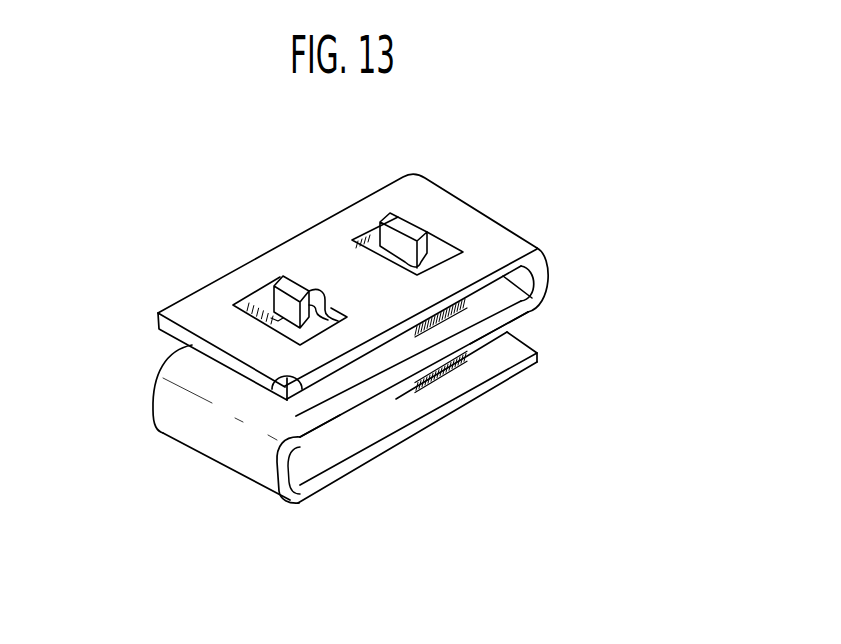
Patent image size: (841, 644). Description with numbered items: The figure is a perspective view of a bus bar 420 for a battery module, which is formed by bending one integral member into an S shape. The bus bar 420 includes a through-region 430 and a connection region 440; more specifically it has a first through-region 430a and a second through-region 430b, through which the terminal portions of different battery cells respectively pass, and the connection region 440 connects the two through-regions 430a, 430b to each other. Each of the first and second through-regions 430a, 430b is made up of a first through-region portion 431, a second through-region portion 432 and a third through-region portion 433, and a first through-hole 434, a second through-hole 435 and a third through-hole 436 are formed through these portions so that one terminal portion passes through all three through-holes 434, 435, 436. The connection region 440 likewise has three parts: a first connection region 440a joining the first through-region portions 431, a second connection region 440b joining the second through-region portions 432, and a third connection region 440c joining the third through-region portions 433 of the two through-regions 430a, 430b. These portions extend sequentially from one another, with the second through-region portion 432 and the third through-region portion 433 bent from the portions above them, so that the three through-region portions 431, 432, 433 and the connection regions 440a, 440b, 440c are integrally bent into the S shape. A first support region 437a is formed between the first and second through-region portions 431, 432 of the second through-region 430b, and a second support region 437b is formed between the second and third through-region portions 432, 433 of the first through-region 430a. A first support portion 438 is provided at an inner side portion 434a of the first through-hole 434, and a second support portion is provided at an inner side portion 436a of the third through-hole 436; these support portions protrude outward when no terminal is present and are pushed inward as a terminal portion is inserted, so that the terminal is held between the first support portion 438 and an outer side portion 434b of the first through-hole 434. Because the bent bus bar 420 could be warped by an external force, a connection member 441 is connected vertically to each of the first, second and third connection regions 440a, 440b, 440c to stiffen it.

The bus bar 420 is at (137, 149).
The through-region 430 is at (651, 189).
The first through-region portion 431 is at (513, 245).
The second through-region portion 432 is at (546, 300).
The third through-region portion 433 is at (548, 350).
The first through-hole 434 is at (268, 293).
The inner side portion of the first through-hole 434a is at (328, 305).
The outer side portion of the first through-hole 434b is at (250, 297).
The second through-hole 435 is at (228, 458).
The third through-hole 436 is at (283, 441).
The inner side portion of the third through-hole 436a is at (328, 422).
The first support region 437a is at (508, 253).
The second support region 437b is at (218, 458).
The first support portion 438 is at (292, 283).
The connection region 440 is at (536, 447).
The first connection region 440a is at (393, 390).
The second connection region 440b is at (407, 400).
The third connection region 440c is at (400, 438).
The connection member 441 is at (272, 245).
The first through-region 430a is at (348, 490).
The second through-region 430b is at (513, 397).